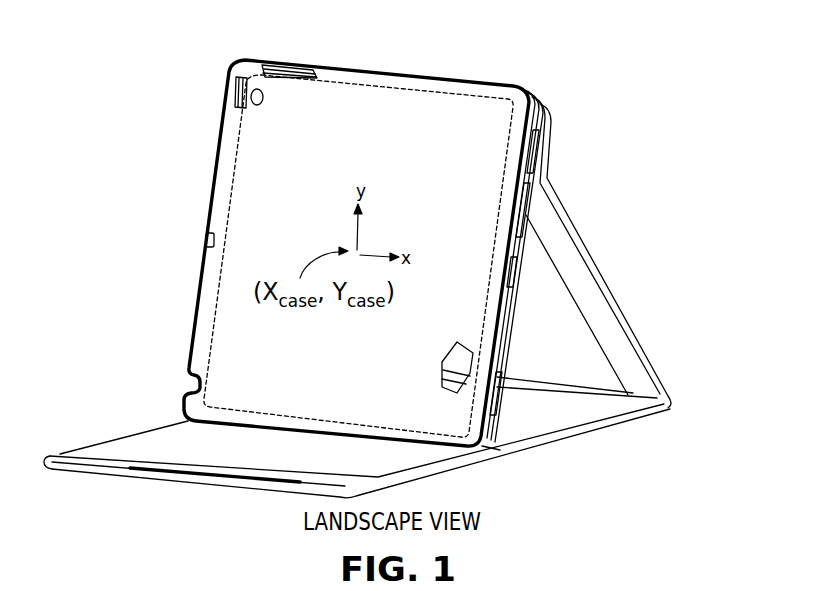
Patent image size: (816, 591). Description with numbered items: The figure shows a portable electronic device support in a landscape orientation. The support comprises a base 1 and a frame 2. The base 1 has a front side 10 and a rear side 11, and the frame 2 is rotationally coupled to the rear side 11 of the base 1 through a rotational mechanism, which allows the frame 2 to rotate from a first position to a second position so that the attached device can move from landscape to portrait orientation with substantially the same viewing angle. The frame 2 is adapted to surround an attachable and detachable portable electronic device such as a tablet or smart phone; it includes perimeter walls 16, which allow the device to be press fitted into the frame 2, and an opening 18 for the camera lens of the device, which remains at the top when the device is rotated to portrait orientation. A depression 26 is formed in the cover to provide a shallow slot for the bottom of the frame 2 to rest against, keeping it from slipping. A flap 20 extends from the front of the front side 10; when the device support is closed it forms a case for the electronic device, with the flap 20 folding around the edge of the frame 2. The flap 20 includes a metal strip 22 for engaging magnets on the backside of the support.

The base 1 is at (620, 293).
The frame 2 is at (456, 164).
The front side 10 is at (264, 450).
The rear side 11 is at (557, 338).
The perimeter walls 16 is at (450, 80).
The opening 18 is at (256, 88).
The flap 20 is at (63, 453).
The metal strip 22 is at (183, 485).
The depression 26 is at (492, 450).